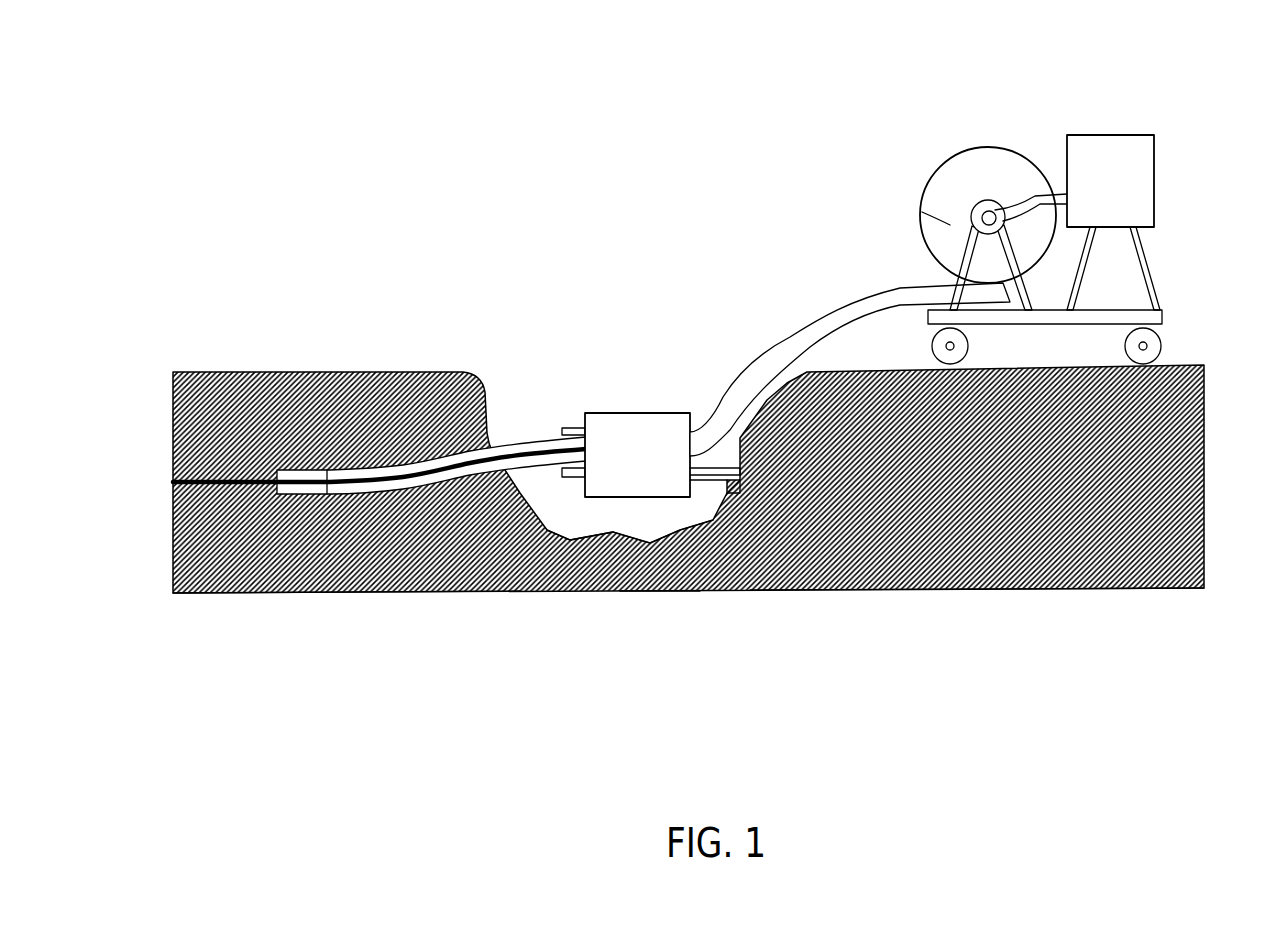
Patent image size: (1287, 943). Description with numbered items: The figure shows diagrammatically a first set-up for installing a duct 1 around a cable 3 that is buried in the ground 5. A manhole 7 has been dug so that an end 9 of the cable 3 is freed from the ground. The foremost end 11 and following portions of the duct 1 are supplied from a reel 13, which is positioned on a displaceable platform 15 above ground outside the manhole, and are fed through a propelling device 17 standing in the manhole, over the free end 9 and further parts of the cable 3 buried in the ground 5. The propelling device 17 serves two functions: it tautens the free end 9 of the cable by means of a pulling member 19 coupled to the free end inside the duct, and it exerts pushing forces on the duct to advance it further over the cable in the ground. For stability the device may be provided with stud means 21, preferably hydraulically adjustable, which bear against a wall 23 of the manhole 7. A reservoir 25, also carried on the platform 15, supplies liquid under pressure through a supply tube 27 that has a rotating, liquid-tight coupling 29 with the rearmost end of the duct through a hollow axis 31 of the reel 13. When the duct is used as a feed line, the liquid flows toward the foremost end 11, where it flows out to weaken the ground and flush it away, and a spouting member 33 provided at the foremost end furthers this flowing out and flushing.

The duct 1 is at (797, 337).
The cable 3 is at (200, 596).
The ground 5 is at (870, 592).
The manhole 7 is at (662, 592).
The end of the cable 9 is at (500, 455).
The foremost end of the duct 11 is at (385, 596).
The reel 13 is at (988, 170).
The displaceable platform 15 is at (1163, 316).
The propelling device 17 is at (637, 437).
The pulling member 19 is at (570, 530).
The stud means 21 is at (705, 592).
The wall of the manhole 23 is at (733, 592).
The reservoir 25 is at (1107, 162).
The supply tube 27 is at (1053, 197).
The rotating liquid-tight coupling 29 is at (993, 205).
The hollow axis 31 is at (923, 212).
The spouting member 33 is at (307, 395).